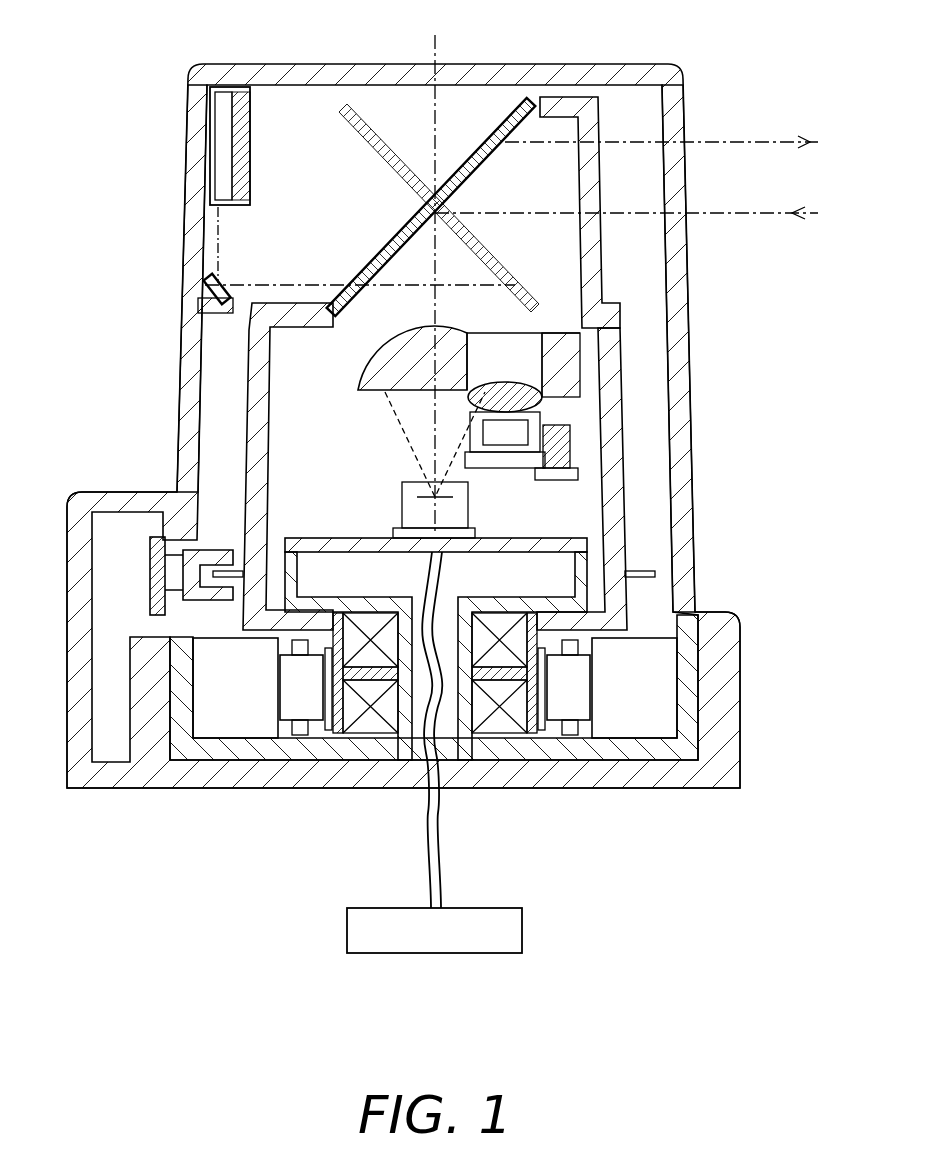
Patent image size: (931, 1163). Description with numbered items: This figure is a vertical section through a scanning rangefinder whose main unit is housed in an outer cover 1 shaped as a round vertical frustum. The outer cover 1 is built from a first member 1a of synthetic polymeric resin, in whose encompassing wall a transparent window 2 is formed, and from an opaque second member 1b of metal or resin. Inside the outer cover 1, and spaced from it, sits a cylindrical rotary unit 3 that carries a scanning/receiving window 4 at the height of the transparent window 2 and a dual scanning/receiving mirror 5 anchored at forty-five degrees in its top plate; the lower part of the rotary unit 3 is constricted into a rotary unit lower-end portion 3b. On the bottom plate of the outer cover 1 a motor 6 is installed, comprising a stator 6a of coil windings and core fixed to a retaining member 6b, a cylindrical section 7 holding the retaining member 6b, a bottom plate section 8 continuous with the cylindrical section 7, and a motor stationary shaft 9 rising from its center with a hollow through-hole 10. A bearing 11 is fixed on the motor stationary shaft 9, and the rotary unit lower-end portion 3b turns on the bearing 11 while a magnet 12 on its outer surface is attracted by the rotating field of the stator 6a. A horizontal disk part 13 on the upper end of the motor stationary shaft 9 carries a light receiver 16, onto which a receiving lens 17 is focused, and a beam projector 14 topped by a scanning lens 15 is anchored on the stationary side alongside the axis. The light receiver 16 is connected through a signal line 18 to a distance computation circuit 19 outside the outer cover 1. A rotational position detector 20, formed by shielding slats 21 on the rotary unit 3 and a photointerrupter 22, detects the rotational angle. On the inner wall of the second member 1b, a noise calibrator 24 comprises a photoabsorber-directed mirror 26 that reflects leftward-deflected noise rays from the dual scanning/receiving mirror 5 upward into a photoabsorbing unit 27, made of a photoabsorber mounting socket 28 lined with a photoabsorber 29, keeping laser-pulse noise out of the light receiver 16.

The outer cover 1 is at (693, 485).
The first member 1a is at (692, 403).
The second member 1b is at (180, 375).
The transparent window 2 is at (689, 262).
The cylindrical rotary unit 3 is at (622, 518).
The rotary unit lower-end portion 3b is at (512, 740).
The scanning/receiving window 4 is at (600, 184).
The dual scanning/receiving mirror 5 is at (487, 135).
The motor 6 is at (708, 681).
The stator 6a is at (580, 703).
The retaining member 6b is at (639, 700).
The cylindrical section 7 is at (692, 702).
The bottom plate section 8 is at (284, 760).
The motor stationary shaft 9 is at (458, 735).
The through-hole 10 is at (408, 720).
The bearing 11 is at (374, 740).
The magnet 12 is at (326, 745).
The horizontal disk part 13 is at (314, 538).
The beam projector 14 is at (558, 428).
The scanning lens 15 is at (565, 362).
The light receiver 16 is at (469, 505).
The receiving lens 17 is at (370, 358).
The signal line 18 is at (443, 572).
The distance computation circuit 19 is at (522, 932).
The rotational position detector 20 is at (138, 583).
The shielding slats 21 is at (647, 575).
The photointerrupter 22 is at (225, 548).
The noise calibrator 24 is at (254, 276).
The photoabsorber-directed mirror 26 is at (212, 266).
The photoabsorbing unit 27 is at (238, 214).
The photoabsorber mounting socket 28 is at (225, 160).
The photoabsorber 29 is at (215, 118).